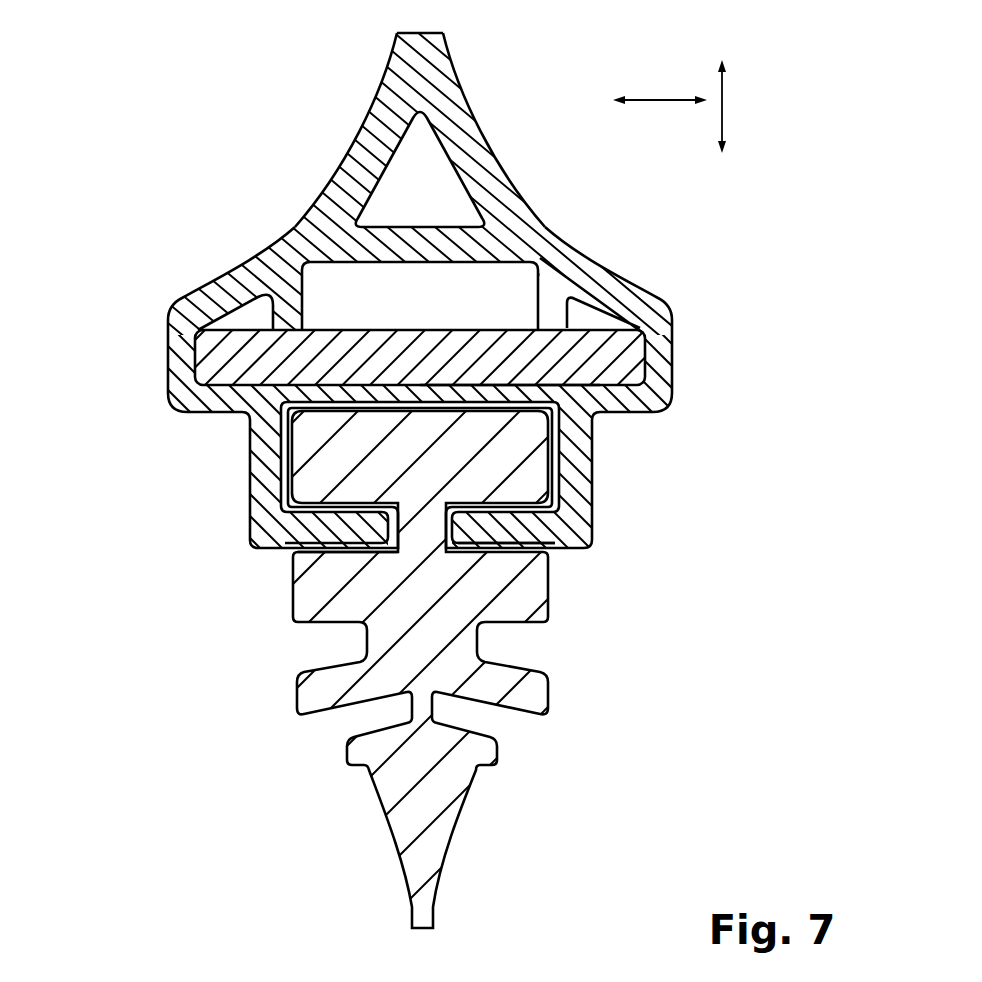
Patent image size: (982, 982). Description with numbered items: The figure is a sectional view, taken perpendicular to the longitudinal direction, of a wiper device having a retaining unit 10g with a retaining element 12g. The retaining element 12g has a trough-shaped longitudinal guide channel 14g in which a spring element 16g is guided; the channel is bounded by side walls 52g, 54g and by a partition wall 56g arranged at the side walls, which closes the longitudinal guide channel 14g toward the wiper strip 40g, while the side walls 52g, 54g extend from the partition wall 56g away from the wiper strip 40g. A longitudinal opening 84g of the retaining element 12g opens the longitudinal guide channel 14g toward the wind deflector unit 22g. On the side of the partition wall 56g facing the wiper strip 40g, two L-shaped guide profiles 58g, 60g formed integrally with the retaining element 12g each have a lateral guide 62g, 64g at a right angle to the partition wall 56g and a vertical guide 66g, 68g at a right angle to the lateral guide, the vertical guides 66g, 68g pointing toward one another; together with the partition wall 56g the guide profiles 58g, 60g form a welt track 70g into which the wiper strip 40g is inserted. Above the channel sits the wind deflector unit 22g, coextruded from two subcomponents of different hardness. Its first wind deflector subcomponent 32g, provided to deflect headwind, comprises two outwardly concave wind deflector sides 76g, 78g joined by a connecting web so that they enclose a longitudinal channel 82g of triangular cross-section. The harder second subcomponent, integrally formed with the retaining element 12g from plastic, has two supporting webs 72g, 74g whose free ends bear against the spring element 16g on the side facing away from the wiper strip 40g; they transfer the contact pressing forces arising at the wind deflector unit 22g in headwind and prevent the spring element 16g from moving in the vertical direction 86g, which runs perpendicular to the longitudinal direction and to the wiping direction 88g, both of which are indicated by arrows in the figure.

The retaining unit 10g is at (128, 458).
The retaining element 12g is at (187, 363).
The longitudinal guide channel 14g is at (620, 340).
The spring element 16g is at (340, 357).
The wind deflector unit 22g is at (257, 157).
The first wind deflector subcomponent 32g is at (395, 38).
The wiper strip 40g is at (410, 653).
The side wall 52g is at (187, 390).
The side wall 54g is at (663, 367).
The partition wall 56g is at (508, 385).
The guide profile 58g is at (350, 533).
The guide profile 60g is at (563, 527).
The lateral guide 62g is at (270, 490).
The lateral guide 64g is at (570, 490).
The vertical guide 66g is at (327, 553).
The vertical guide 68g is at (520, 527).
The welt track 70g is at (650, 447).
The supporting web 72g is at (243, 267).
The supporting web 74g is at (550, 307).
The wind deflector side 76g is at (365, 117).
The wind deflector side 78g is at (475, 117).
The longitudinal channel 82g is at (443, 208).
The longitudinal opening 84g is at (440, 308).
The vertical direction 86g is at (724, 100).
The wiping direction 88g is at (660, 98).